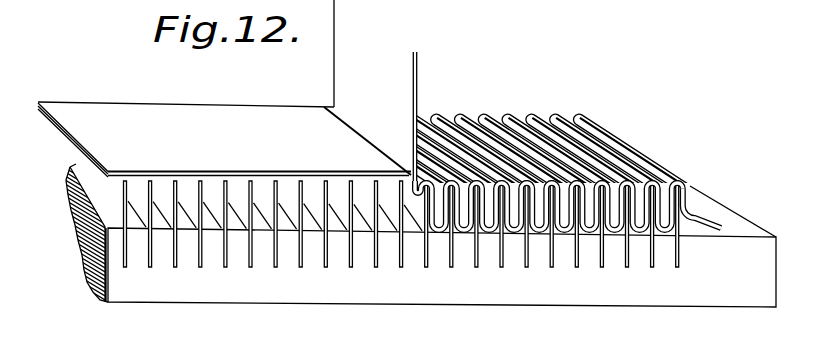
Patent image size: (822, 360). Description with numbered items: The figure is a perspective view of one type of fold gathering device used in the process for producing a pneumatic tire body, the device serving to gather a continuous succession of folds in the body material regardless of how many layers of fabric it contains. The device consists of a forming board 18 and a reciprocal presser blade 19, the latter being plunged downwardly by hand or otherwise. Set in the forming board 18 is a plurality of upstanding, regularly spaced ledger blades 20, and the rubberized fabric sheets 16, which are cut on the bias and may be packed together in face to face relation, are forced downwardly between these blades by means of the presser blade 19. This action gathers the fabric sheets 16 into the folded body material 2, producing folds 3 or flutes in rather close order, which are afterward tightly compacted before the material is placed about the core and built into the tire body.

The folded body material 2 is at (514, 159).
The folds 3 is at (678, 179).
The rubberized fabric sheets 16 is at (224, 88).
The forming board 18 is at (457, 295).
The presser blade 19 is at (409, 80).
The ledger blades 20 is at (287, 185).